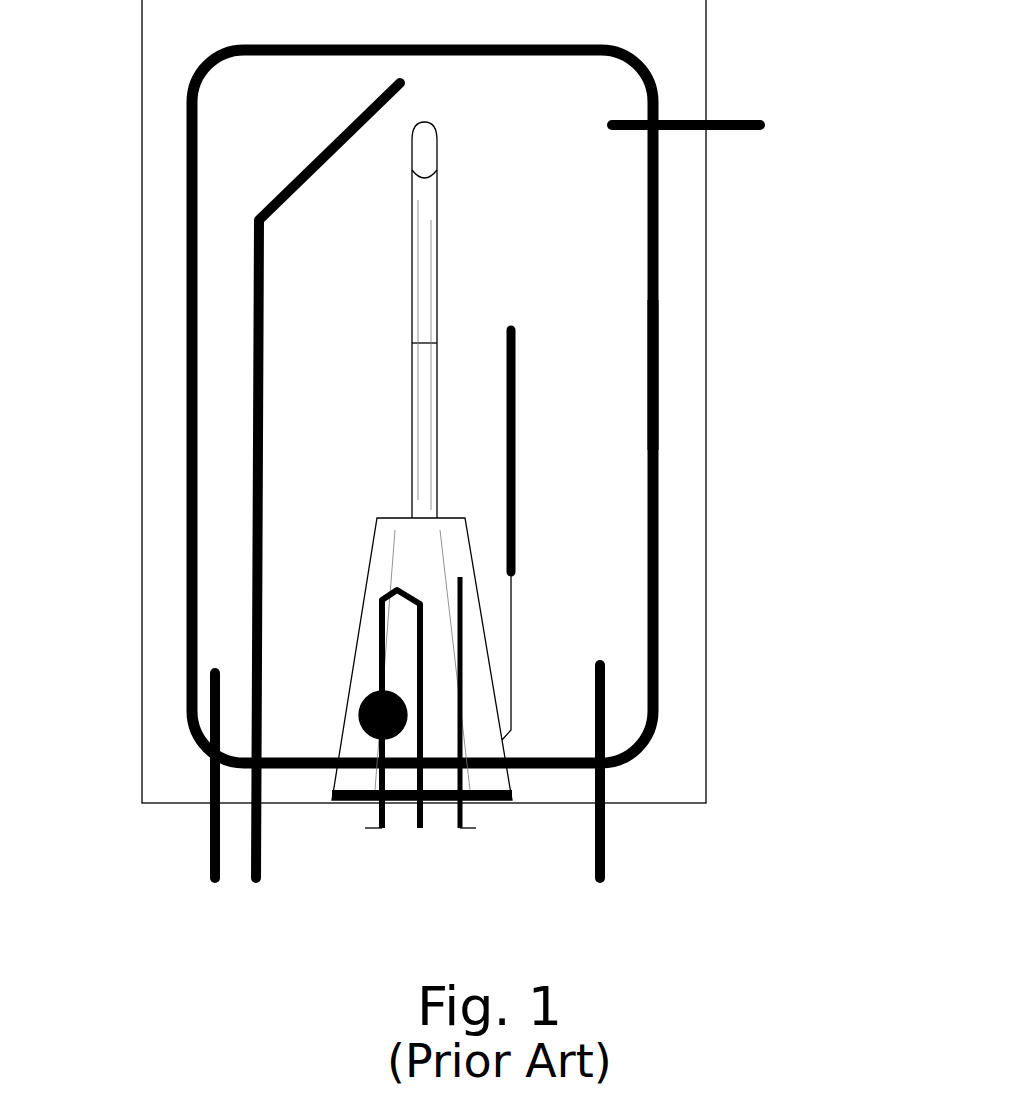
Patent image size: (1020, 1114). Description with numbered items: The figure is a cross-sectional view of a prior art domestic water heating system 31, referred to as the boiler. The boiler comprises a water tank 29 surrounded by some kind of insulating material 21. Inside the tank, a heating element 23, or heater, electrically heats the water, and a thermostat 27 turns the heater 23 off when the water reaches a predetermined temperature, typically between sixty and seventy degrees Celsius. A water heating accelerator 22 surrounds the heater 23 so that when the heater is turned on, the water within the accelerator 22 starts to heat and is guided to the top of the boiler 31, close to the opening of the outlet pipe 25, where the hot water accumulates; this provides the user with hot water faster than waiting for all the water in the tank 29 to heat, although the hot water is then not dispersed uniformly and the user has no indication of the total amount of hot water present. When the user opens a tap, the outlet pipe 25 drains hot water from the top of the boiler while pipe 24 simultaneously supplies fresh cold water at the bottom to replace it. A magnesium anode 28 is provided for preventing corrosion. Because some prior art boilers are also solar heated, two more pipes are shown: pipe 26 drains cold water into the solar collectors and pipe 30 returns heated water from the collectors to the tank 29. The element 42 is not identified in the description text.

The insulating material 21 is at (180, 85).
The water heating accelerator 22 is at (395, 541).
The heating element 23 is at (380, 637).
The pipe 24 is at (212, 708).
The outlet pipe 25 is at (262, 853).
The pipe 26 is at (605, 840).
The thermostat 27 is at (463, 606).
The magnesium anode 28 is at (516, 478).
The water tank 29 is at (658, 368).
The pipe 30 is at (743, 130).
The water heating system 31 is at (708, 65).
The getter rod 42 is at (410, 290).